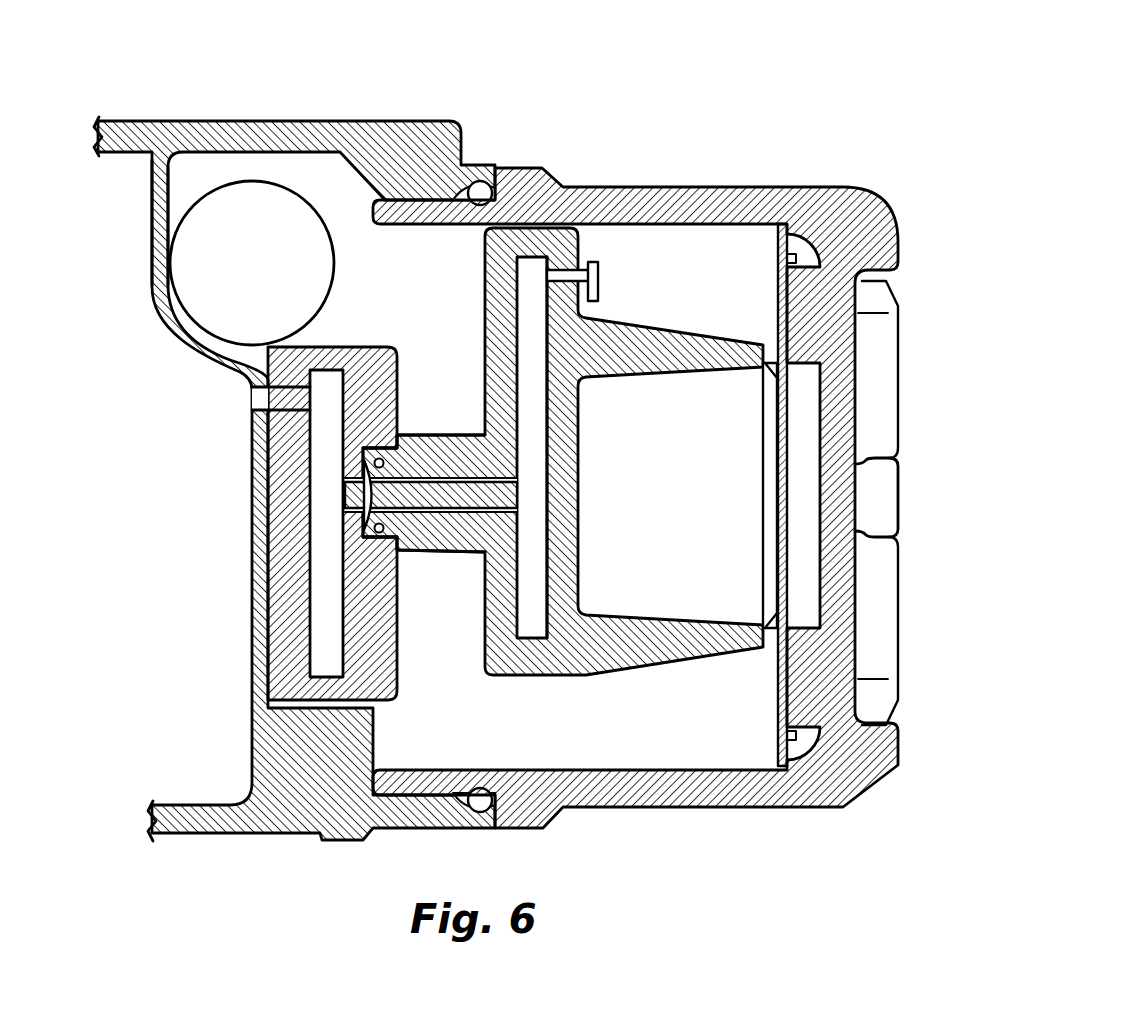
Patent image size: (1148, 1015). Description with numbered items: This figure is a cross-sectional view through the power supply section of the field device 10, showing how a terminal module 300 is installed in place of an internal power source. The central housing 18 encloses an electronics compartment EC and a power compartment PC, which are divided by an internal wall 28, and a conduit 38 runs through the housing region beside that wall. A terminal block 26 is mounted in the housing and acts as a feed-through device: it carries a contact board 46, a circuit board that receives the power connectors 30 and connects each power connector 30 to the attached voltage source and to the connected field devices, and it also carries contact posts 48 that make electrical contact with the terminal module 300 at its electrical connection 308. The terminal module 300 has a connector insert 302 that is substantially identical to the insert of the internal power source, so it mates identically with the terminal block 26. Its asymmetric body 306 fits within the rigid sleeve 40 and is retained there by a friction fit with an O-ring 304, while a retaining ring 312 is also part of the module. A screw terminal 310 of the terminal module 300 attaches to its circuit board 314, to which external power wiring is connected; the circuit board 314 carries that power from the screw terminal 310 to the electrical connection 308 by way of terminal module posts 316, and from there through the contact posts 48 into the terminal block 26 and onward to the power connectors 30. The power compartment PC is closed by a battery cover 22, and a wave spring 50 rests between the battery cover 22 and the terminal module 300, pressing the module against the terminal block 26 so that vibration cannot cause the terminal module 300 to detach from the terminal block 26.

The field device 10 is at (762, 92).
The central housing 18 is at (295, 822).
The battery cover 22 is at (820, 797).
The terminal block 26 is at (385, 685).
The internal wall 28 is at (158, 207).
The power connectors 30 is at (296, 408).
The conduit 38 is at (218, 262).
The rigid sleeve 40 is at (447, 555).
The contact board 46 is at (325, 517).
The contact posts 48 is at (352, 473).
The wave spring 50 is at (778, 692).
The terminal module 300 is at (588, 530).
The connector insert 302 is at (455, 444).
The O-ring 304 is at (379, 534).
The asymmetric body 306 is at (468, 522).
The electrical connection 308 is at (384, 463).
The screw terminal 310 is at (600, 284).
The retaining ring 312 is at (764, 618).
The circuit board 314 is at (530, 411).
The terminal module posts 316 is at (549, 457).
The electronics compartment EC is at (187, 767).
The power compartment PC is at (590, 753).